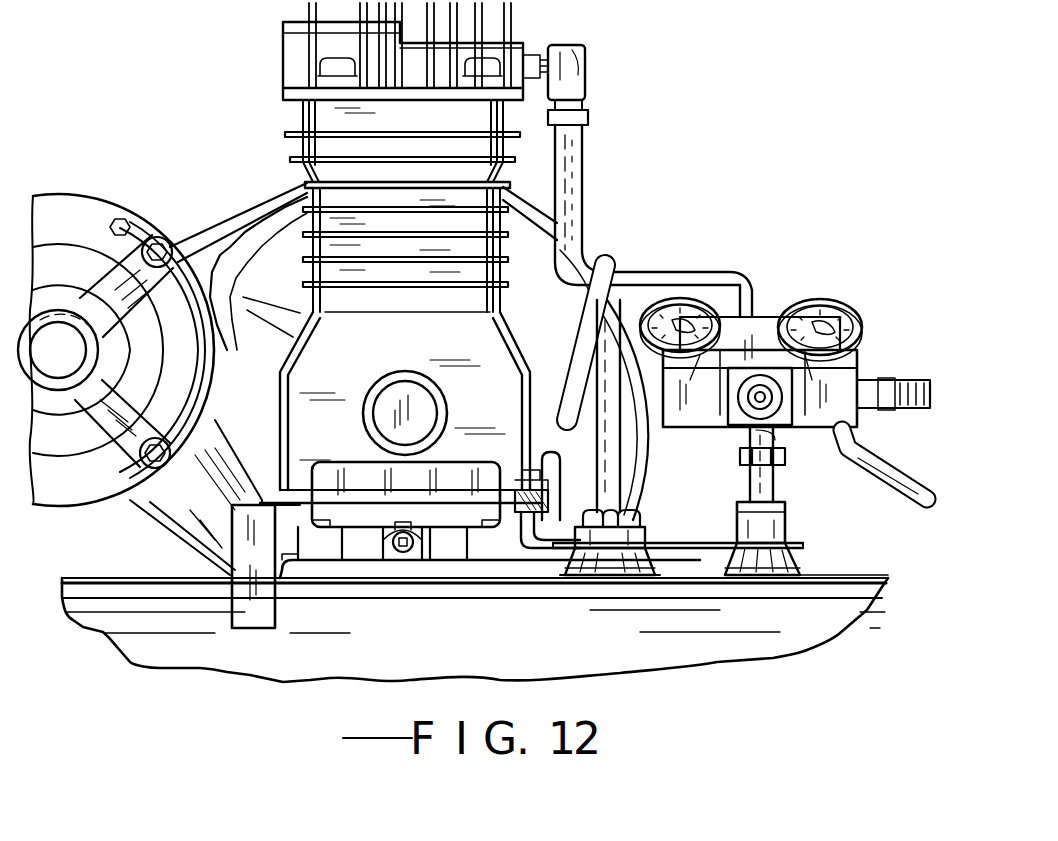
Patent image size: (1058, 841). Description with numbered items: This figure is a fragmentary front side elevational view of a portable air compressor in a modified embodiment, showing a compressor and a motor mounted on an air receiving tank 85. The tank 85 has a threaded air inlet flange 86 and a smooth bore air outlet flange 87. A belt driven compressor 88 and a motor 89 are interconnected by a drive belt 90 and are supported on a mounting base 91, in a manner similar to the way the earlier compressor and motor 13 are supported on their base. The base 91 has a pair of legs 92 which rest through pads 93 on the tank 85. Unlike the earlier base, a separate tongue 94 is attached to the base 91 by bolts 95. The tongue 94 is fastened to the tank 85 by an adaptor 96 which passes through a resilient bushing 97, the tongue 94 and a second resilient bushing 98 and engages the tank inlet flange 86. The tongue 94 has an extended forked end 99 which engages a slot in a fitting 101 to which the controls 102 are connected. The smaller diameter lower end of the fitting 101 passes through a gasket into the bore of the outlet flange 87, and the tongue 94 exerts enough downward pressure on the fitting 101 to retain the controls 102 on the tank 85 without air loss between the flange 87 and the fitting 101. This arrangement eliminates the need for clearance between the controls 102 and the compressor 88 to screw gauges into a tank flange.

The air receiving tank 85 is at (780, 647).
The threaded air inlet flange 86 is at (603, 563).
The smooth bore air outlet flange 87 is at (790, 570).
The belt driven compressor 88 is at (290, 52).
The motor 89 is at (102, 198).
The drive belt 90 is at (217, 222).
The mounting base 91 is at (376, 565).
The legs 92 is at (265, 592).
The pads 93 is at (240, 620).
The tongue 94 is at (668, 543).
The bolts 95 is at (525, 550).
The adaptor 96 is at (650, 502).
The resilient bushing 97 is at (645, 520).
The resilient bushing 98 is at (650, 560).
The extended forked end 99 is at (790, 546).
The fitting 101 is at (790, 528).
The controls 102 is at (777, 308).
The motor 13 is at (757, 481).